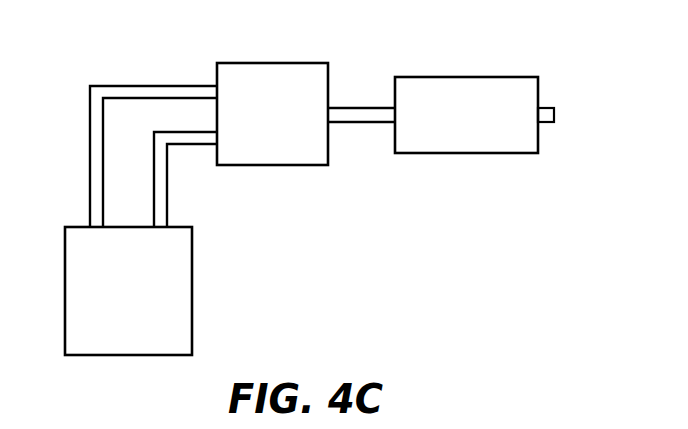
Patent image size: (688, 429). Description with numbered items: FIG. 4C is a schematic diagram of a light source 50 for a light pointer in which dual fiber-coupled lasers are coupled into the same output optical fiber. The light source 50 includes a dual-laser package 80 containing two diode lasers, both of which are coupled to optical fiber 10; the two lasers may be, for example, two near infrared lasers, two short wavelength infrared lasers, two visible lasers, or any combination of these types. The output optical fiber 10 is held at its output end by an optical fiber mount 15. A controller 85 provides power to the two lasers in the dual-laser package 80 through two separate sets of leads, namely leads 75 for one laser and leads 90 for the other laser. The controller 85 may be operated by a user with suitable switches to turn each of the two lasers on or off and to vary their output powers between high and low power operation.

The optical fiber 10 is at (367, 122).
The optical fiber mount 15 is at (554, 113).
The light source 50 is at (416, 77).
The leads 75 is at (193, 132).
The dual-laser package 80 is at (290, 165).
The controller 85 is at (193, 272).
The leads 90 is at (103, 104).